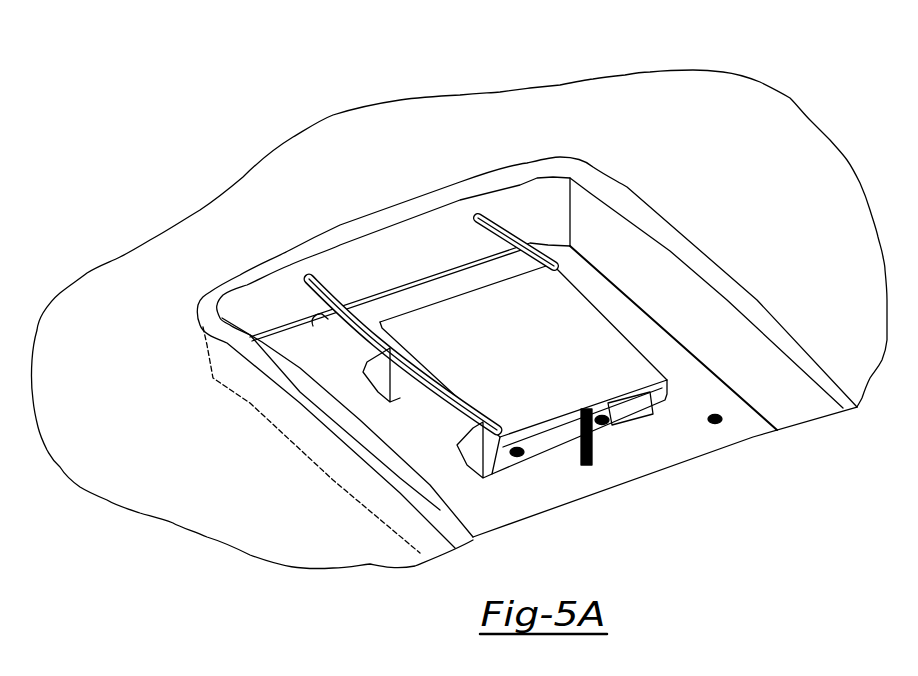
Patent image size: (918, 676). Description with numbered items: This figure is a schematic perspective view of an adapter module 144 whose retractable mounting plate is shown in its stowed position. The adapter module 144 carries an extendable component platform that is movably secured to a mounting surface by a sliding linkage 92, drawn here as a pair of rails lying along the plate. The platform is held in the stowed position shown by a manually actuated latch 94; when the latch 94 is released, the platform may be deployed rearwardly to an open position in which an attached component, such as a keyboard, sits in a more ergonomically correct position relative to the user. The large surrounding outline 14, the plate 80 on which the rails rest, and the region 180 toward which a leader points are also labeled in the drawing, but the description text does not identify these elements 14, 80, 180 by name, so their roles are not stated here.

The vehicle floor / mounting surface 14 is at (718, 92).
The adapter module 144 is at (667, 230).
The mounting plate 80 is at (503, 356).
The sliding linkage 92 is at (313, 325).
The latch 94 is at (600, 427).
The floor of tray 180 is at (650, 458).